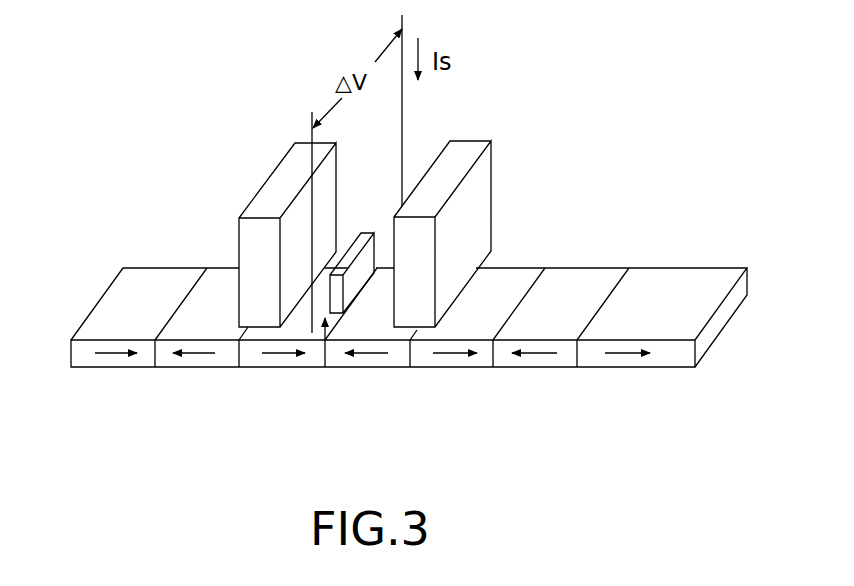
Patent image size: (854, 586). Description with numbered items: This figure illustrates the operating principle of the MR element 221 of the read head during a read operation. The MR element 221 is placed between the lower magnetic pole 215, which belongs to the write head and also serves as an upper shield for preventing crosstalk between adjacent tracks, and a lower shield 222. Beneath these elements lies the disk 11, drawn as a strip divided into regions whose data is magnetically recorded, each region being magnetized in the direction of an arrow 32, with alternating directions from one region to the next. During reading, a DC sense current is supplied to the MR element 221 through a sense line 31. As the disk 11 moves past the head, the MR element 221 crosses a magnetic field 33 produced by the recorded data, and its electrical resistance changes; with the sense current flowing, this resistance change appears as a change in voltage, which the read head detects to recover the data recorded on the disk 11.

The disk 11 is at (118, 368).
The arrow 32 is at (278, 350).
The magnetic field 33 is at (322, 345).
The MR element 221 is at (358, 287).
The lower shield 222 is at (264, 185).
The lower magnetic pole 215 is at (487, 190).
The sense line 31 is at (403, 107).